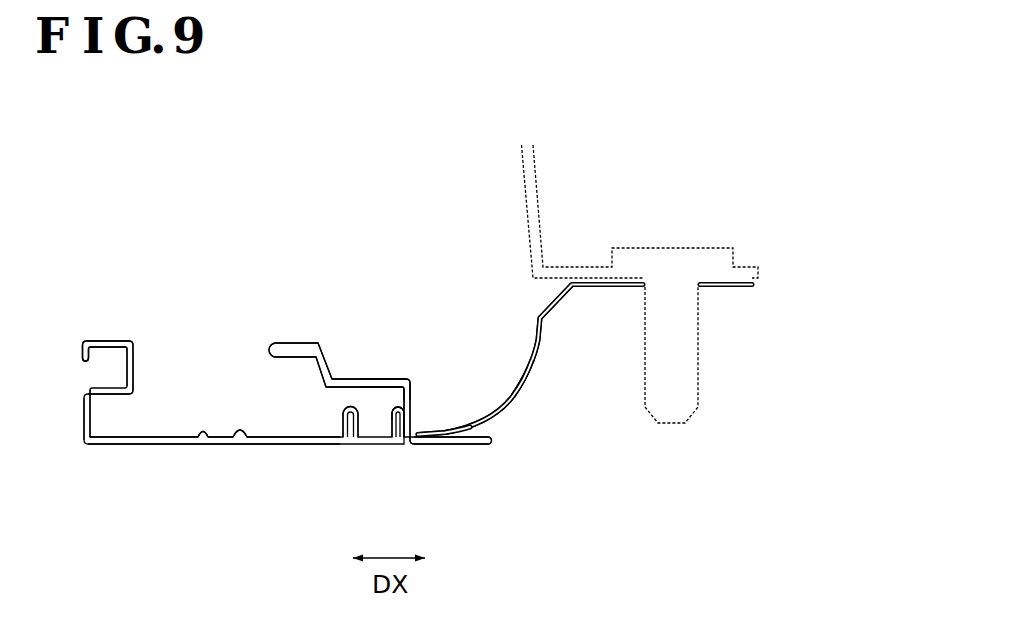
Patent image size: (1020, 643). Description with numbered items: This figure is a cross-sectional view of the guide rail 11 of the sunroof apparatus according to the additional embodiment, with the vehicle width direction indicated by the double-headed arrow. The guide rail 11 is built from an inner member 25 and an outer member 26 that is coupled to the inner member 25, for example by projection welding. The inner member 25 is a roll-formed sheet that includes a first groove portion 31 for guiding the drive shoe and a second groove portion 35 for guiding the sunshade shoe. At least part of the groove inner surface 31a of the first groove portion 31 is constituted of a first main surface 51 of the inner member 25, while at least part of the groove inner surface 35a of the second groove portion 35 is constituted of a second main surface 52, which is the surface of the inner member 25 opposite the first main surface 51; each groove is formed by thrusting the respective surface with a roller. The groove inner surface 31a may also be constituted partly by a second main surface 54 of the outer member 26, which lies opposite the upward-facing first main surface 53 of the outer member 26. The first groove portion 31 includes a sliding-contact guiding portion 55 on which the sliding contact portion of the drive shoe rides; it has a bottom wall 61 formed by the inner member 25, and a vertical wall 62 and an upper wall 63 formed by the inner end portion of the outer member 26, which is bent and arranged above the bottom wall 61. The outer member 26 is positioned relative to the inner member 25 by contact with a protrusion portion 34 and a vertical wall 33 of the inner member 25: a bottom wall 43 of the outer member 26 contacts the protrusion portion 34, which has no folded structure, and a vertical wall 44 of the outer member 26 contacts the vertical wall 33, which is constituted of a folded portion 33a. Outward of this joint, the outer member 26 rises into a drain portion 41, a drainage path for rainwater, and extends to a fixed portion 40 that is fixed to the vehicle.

The guide rail 11 is at (643, 143).
The inner member 25 is at (173, 290).
The outer member 26 is at (390, 277).
The first groove portion 31 is at (205, 440).
The groove inner surface 31a is at (243, 437).
The vertical wall 33 is at (392, 445).
The folded portion 33a is at (380, 420).
The protrusion portion 34 is at (458, 445).
The second groove portion 35 is at (91, 362).
The groove inner surface 35a is at (106, 352).
The fixed portion 40 is at (730, 287).
The drain portion 41 is at (530, 348).
The bottom wall 43 is at (432, 428).
The vertical wall 44 is at (418, 412).
The first main surface 51 is at (161, 436).
The second main surface 52 is at (83, 414).
The first main surface 53 is at (513, 398).
The second main surface 54 is at (340, 388).
The sliding-contact guiding portion 55 is at (352, 376).
The bottom wall 61 is at (353, 447).
The vertical wall 62 is at (409, 385).
The upper wall 63 is at (377, 378).